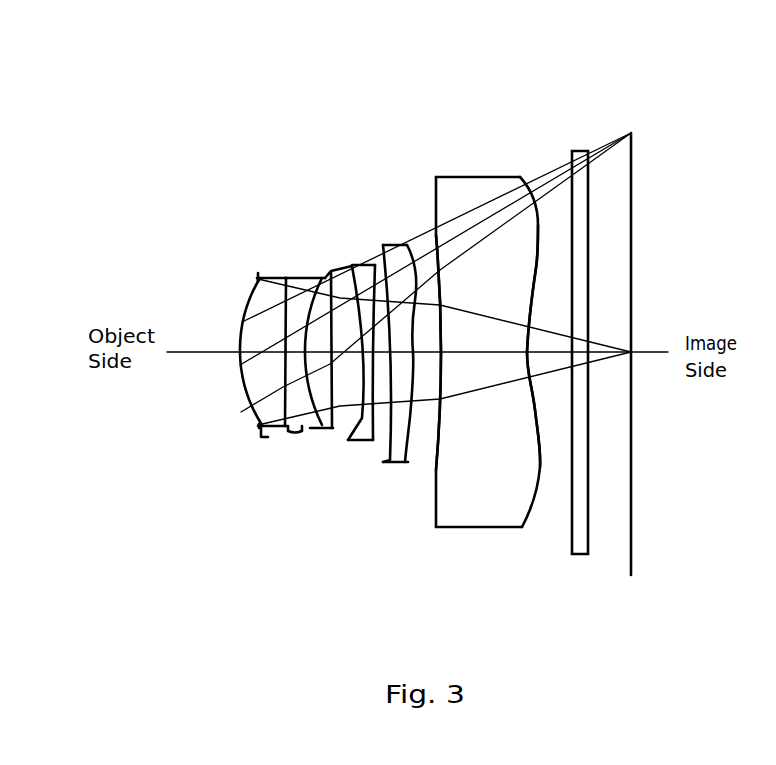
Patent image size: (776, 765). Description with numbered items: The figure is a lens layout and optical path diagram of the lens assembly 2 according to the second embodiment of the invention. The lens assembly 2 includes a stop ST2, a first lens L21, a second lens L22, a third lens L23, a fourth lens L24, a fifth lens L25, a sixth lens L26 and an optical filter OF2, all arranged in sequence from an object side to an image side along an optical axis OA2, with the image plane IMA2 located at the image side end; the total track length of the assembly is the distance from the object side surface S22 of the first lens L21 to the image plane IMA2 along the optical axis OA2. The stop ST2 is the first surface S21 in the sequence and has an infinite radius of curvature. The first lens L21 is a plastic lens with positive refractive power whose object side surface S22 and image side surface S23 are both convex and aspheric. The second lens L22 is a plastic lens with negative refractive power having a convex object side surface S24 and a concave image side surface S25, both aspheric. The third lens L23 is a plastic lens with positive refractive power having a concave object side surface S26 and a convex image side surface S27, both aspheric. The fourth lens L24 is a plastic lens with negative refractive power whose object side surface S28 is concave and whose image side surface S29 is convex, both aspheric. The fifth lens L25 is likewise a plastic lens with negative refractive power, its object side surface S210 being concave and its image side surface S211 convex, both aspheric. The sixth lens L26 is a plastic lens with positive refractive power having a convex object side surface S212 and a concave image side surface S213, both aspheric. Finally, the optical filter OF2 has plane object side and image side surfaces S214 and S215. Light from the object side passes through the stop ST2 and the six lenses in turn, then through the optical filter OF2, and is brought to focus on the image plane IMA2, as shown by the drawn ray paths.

The lens assembly 2 is at (67, 83).
The stop ST2 is at (260, 277).
The first lens L21 is at (243, 344).
The second lens L22 is at (314, 363).
The third lens L23 is at (360, 345).
The fourth lens L24 is at (413, 344).
The fifth lens L25 is at (472, 347).
The sixth lens L26 is at (505, 344).
The optical filter OF2 is at (622, 368).
The image plane IMA2 is at (629, 133).
The optical axis OA2 is at (207, 352).
The stop surface S21 is at (285, 427).
The object side surface of the first lens S22 is at (257, 425).
The image side surface of the first lens S23 is at (297, 428).
The object side surface of the second lens S24 is at (318, 426).
The image side surface of the second lens S25 is at (330, 427).
The object side surface of the third lens S26 is at (343, 431).
The image side surface of the third lens S27 is at (348, 436).
The object side surface of the fourth lens S28 is at (378, 437).
The image side surface of the fourth lens S29 is at (384, 458).
The object side surface of the fifth lens S210 is at (409, 437).
The image side surface of the fifth lens S211 is at (412, 437).
The object side surface of the sixth lens S212 is at (443, 445).
The image side surface of the sixth lens S213 is at (538, 467).
The object side surface of the optical filter S214 is at (572, 536).
The image side surface of the optical filter S215 is at (588, 538).